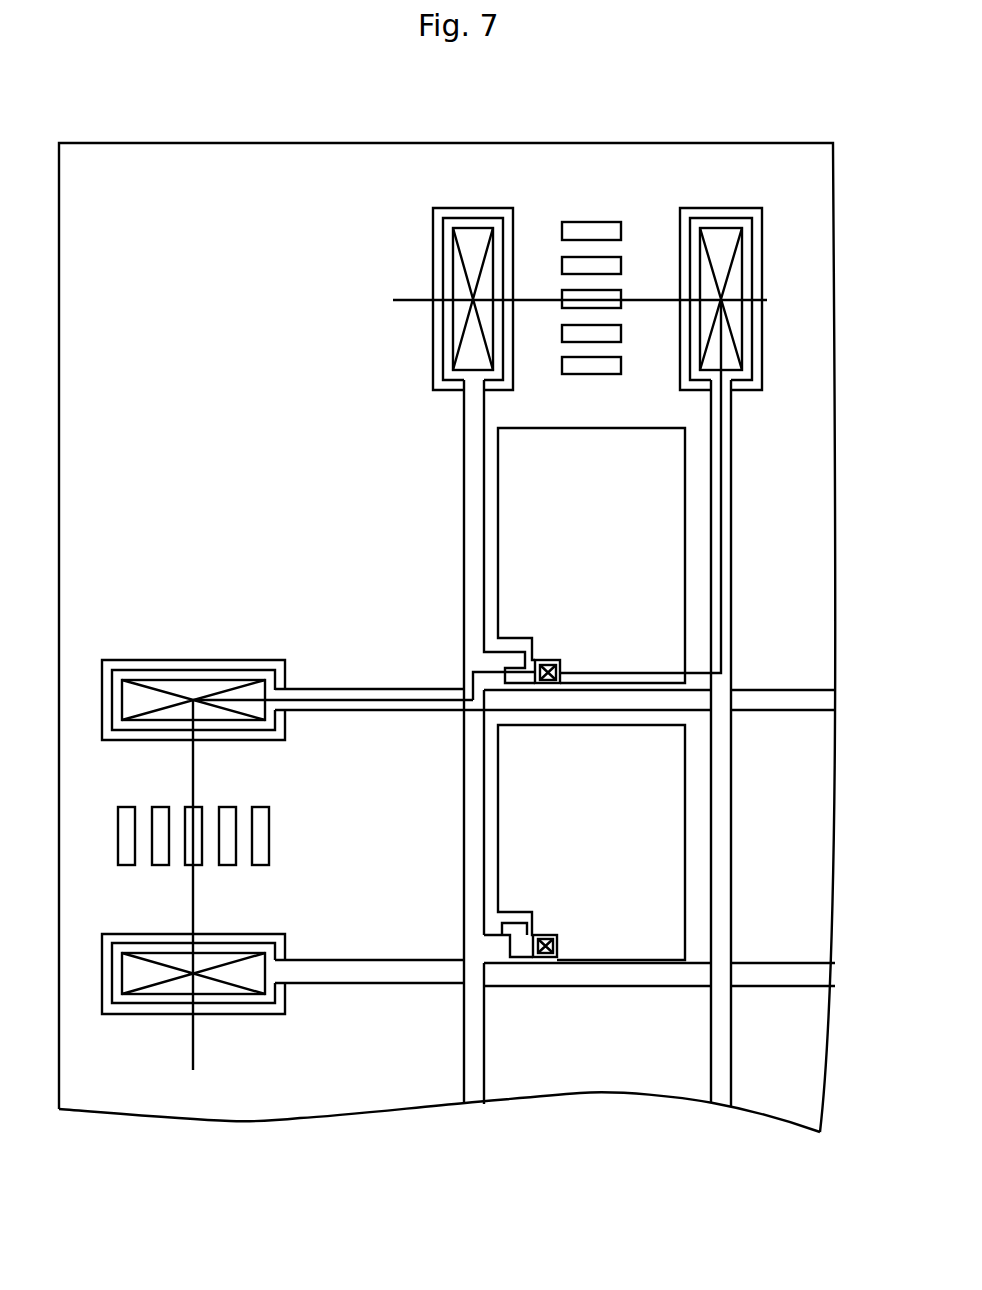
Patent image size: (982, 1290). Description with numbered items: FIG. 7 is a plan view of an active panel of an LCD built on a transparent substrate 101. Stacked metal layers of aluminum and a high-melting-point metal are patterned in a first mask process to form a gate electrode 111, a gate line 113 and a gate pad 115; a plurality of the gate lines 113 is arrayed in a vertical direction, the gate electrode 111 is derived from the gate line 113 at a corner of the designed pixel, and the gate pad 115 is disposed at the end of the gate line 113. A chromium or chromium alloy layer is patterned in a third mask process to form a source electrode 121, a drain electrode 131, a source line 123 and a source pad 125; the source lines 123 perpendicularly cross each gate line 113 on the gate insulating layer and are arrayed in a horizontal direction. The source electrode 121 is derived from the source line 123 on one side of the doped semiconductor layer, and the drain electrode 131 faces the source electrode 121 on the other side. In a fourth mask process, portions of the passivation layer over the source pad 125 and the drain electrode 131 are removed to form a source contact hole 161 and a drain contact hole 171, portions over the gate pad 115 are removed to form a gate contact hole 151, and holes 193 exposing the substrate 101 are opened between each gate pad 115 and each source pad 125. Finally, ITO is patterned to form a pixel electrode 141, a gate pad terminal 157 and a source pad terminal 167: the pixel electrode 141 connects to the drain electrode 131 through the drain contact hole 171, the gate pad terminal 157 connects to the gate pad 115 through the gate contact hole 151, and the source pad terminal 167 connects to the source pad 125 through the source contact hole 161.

The transparent substrate 101 is at (657, 155).
The gate electrode 111 is at (490, 651).
The gate line 113 is at (640, 978).
The gate pad 115 is at (150, 660).
The source electrode 121 is at (498, 688).
The source line 123 is at (467, 500).
The source pad 125 is at (447, 244).
The drain electrode 131 is at (552, 660).
The pixel electrode 141 is at (686, 486).
The gate contact hole 151 is at (212, 960).
The gate pad terminal 157 is at (250, 660).
The source contact hole 161 is at (720, 238).
The source pad terminal 167 is at (440, 368).
The drain contact hole 171 is at (547, 935).
The holes 193 is at (583, 222).